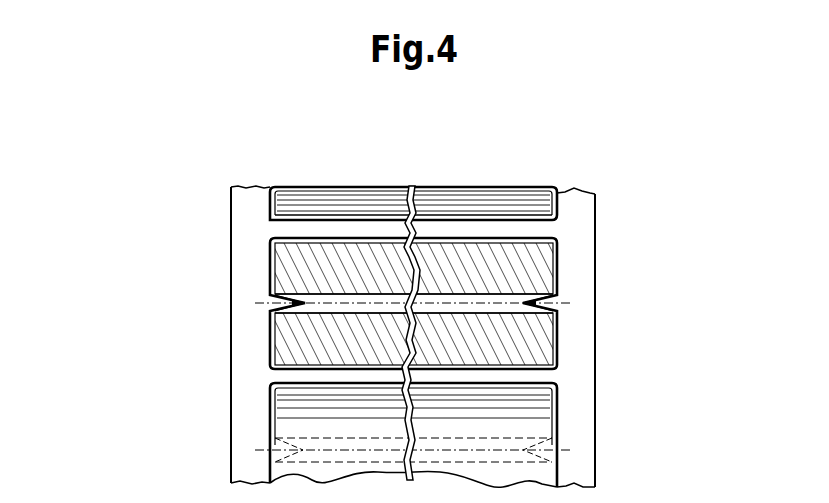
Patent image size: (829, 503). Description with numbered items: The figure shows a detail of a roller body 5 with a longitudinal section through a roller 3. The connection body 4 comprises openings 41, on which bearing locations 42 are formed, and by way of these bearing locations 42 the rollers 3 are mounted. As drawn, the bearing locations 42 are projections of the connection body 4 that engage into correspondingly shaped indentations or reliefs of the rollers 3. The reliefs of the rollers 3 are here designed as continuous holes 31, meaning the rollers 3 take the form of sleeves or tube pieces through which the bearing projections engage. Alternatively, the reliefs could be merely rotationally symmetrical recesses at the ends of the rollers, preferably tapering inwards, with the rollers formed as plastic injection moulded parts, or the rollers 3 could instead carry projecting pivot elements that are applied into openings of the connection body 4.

The roller body 5 is at (186, 270).
The roller 3 is at (292, 267).
The continuous hole 31 is at (335, 298).
The connection body 4 is at (582, 286).
The opening 41 is at (557, 363).
The bearing location 42 is at (546, 306).